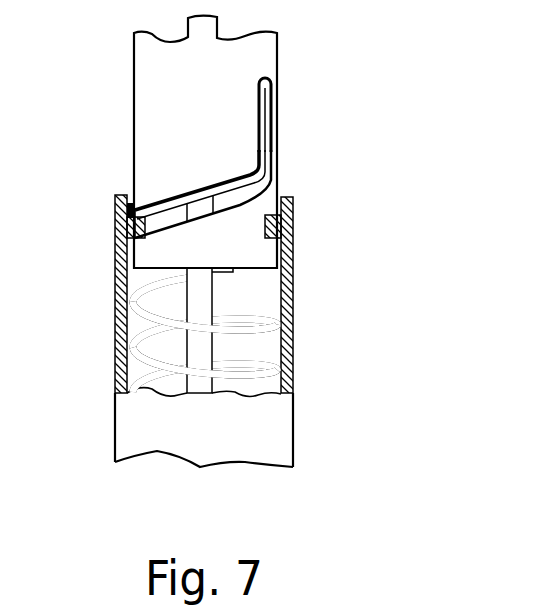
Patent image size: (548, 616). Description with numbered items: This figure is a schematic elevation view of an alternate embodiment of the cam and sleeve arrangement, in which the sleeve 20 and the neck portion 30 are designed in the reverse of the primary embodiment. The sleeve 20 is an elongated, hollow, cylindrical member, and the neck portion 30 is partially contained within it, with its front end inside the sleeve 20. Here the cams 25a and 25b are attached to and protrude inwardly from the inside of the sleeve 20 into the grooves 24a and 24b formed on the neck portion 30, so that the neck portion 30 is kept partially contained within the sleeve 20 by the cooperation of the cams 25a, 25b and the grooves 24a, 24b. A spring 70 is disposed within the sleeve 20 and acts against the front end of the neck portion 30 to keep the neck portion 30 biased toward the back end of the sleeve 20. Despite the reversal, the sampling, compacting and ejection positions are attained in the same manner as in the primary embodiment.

The sleeve 20 is at (293, 357).
The neck portion 30 is at (177, 107).
The groove 24a is at (280, 197).
The groove 24b is at (268, 133).
The cam 25a is at (292, 232).
The cam 25b is at (117, 229).
The spring 70 is at (147, 313).